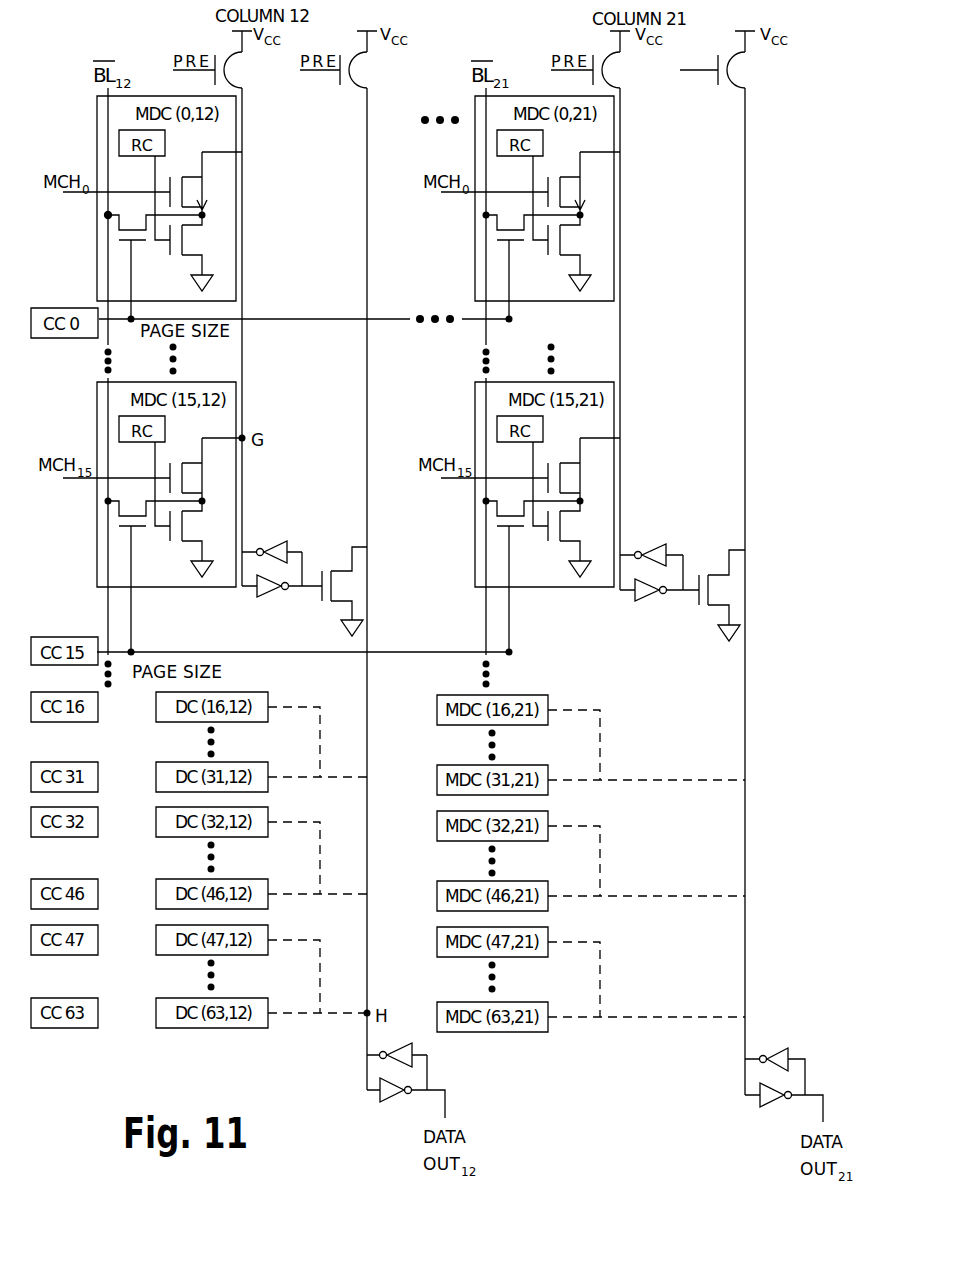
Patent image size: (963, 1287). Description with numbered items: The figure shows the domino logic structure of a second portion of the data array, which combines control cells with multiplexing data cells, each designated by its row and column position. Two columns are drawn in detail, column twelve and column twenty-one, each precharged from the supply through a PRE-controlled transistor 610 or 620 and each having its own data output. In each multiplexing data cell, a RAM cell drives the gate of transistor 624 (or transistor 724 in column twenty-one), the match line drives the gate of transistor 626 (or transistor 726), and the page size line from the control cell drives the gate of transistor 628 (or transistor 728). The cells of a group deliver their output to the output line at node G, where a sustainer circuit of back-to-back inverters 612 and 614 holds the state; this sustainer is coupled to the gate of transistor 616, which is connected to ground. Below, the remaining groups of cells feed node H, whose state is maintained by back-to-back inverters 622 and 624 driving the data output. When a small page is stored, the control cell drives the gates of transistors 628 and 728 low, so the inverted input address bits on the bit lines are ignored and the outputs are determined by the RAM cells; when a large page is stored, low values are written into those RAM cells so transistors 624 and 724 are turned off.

The precharge PMOS transistor for column 12 610 is at (225, 70).
The precharge PMOS transistor for second column line 620 is at (352, 70).
The inverter 612 is at (272, 540).
The inverter 614 is at (272, 598).
The transistor 616 is at (334, 591).
The inverter 622 is at (397, 1048).
The transistor 624 is at (291, 670).
The transistor 626 is at (202, 183).
The transistor 628 is at (154, 219).
The transistor 724 is at (579, 253).
The transistor 726 is at (580, 183).
The transistor 728 is at (533, 219).